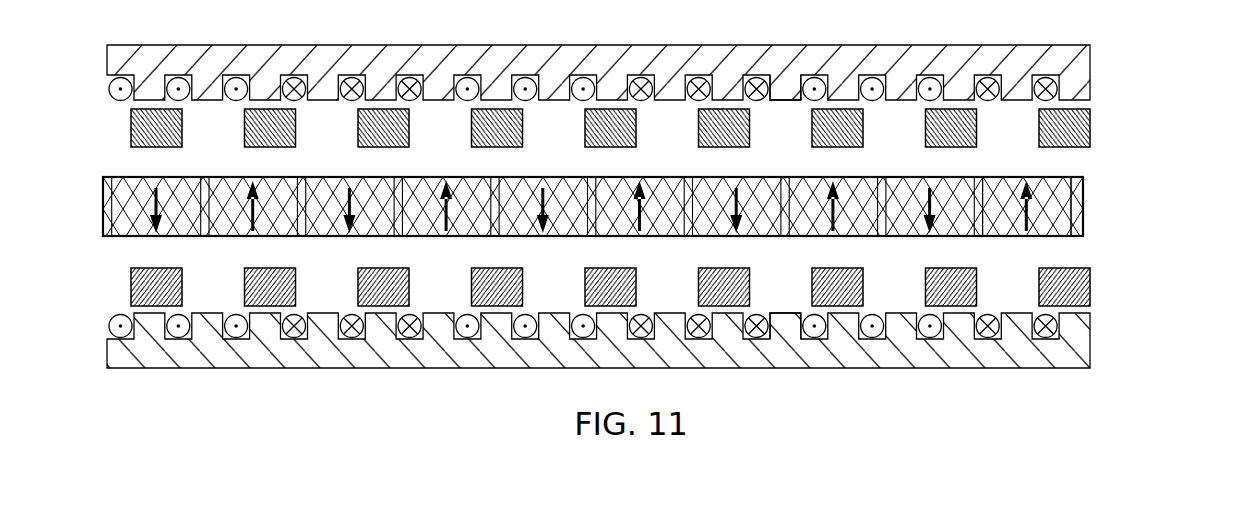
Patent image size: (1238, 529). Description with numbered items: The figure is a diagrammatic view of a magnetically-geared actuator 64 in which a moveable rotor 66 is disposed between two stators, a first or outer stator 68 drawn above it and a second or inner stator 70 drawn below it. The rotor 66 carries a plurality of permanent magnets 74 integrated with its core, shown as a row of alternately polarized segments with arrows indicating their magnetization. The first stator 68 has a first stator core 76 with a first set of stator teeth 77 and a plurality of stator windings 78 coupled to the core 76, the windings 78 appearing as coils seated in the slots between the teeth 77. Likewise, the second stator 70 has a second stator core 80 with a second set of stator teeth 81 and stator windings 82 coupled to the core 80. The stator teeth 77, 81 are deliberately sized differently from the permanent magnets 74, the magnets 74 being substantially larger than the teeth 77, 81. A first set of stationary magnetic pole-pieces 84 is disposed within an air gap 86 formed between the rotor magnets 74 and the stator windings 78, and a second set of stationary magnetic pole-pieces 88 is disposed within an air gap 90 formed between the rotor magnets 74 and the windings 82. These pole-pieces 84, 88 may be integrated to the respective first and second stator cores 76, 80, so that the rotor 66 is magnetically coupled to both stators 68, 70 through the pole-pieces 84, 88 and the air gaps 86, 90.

The magnetically-geared actuator 64 is at (623, 212).
The rotor 66 is at (594, 193).
The first stator 68 is at (571, 84).
The second stator 70 is at (571, 336).
The permanent magnets 74 is at (1050, 193).
The first stator core 76 is at (709, 52).
The first set of stator teeth 77 is at (778, 98).
The stator windings 78 is at (278, 84).
The second stator core 80 is at (390, 357).
The second set of stator teeth 81 is at (778, 318).
The stator windings 82 is at (283, 328).
The first set of stationary magnetic pole-pieces 84 is at (960, 130).
The air gap 86 is at (553, 127).
The second set of stationary magnetic pole-pieces 88 is at (727, 287).
The air gap 90 is at (1018, 290).